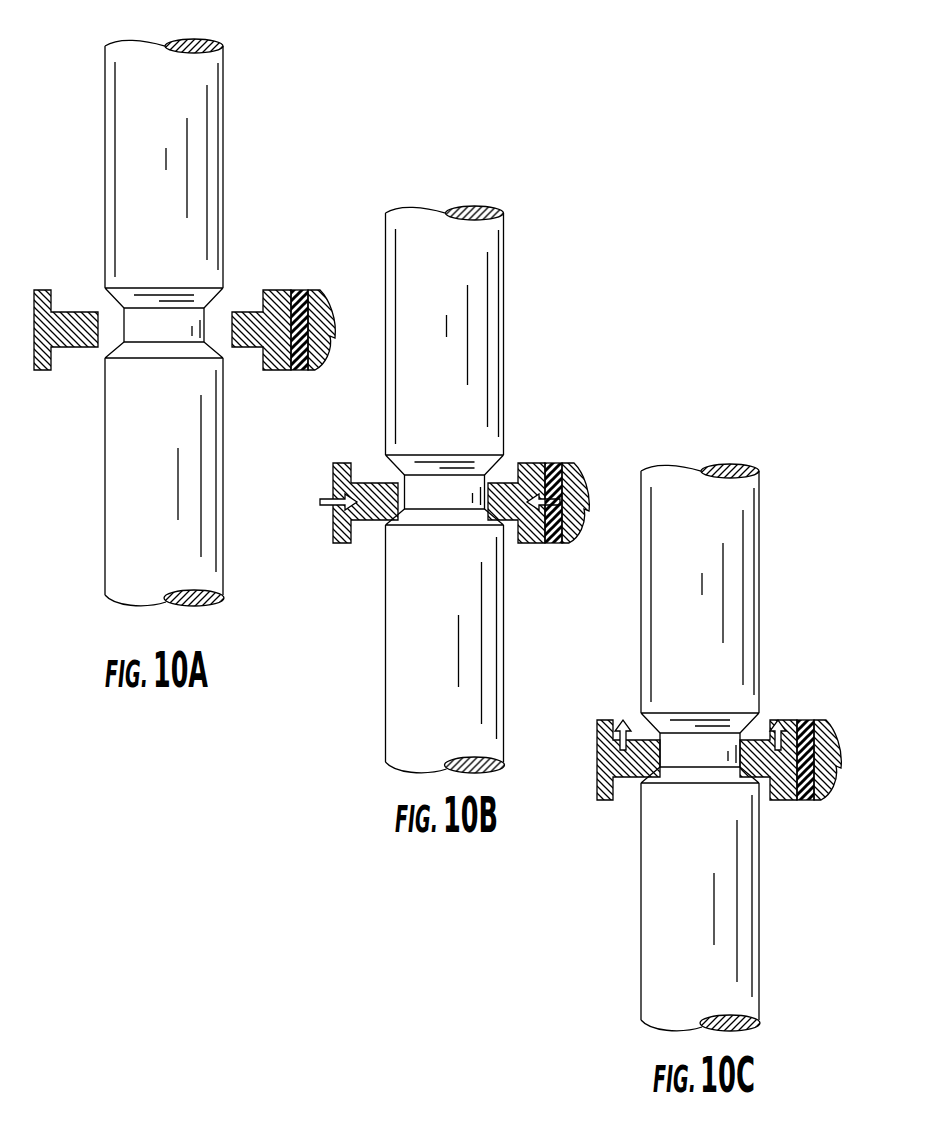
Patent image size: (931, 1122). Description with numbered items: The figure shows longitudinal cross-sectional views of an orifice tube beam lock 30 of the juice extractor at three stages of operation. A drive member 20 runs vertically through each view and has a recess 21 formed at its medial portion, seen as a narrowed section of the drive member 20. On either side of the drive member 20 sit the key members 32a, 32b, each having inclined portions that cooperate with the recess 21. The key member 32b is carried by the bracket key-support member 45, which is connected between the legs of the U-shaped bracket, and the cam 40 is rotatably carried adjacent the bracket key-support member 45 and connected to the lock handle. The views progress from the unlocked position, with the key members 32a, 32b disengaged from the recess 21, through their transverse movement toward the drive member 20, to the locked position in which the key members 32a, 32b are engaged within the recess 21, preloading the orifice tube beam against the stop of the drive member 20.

In FIG. 10A, the drive member 20 is at (224, 158).
In FIG. 10B, the drive member 20 is at (503, 329).
In FIG. 10C, the drive member 20 is at (760, 592).
In FIG. 10A, the recess 21 is at (205, 323).
In FIG. 10B, the recess 21 is at (484, 478).
In FIG. 10C, the recess 21 is at (740, 736).
In FIG. 10A, the orifice tube beam lock 30 is at (150, 340).
In FIG. 10B, the orifice tube beam lock 30 is at (422, 534).
In FIG. 10C, the orifice tube beam lock 30 is at (674, 787).
In FIG. 10A, the key member 32a is at (73, 347).
In FIG. 10B, the key member 32a is at (375, 520).
In FIG. 10C, the key member 32a is at (630, 777).
In FIG. 10A, the key member 32b is at (245, 347).
In FIG. 10B, the key member 32b is at (508, 520).
In FIG. 10C, the key member 32b is at (765, 777).
In FIG. 10A, the cam 40 is at (328, 298).
In FIG. 10B, the cam 40 is at (582, 471).
In FIG. 10C, the cam 40 is at (838, 733).
In FIG. 10A, the bracket key-support member 45 is at (295, 290).
In FIG. 10B, the bracket key-support member 45 is at (551, 463).
In FIG. 10C, the bracket key-support member 45 is at (805, 720).